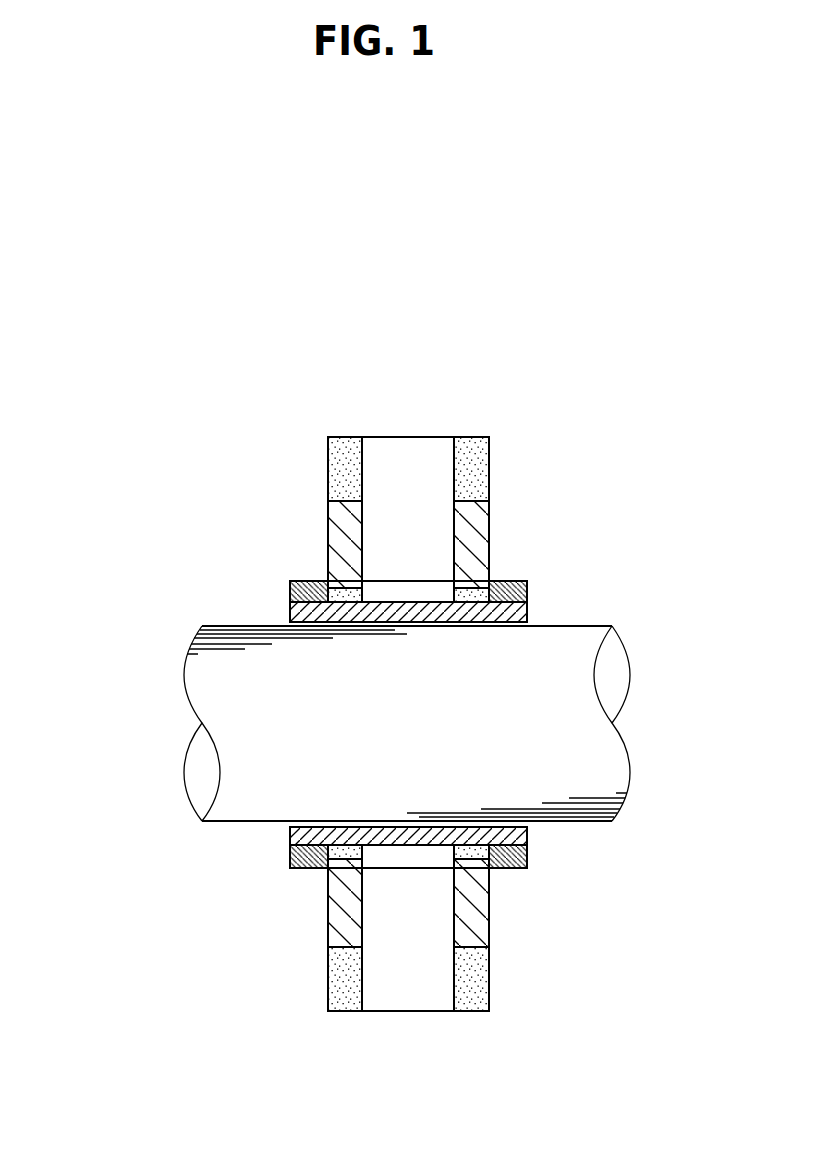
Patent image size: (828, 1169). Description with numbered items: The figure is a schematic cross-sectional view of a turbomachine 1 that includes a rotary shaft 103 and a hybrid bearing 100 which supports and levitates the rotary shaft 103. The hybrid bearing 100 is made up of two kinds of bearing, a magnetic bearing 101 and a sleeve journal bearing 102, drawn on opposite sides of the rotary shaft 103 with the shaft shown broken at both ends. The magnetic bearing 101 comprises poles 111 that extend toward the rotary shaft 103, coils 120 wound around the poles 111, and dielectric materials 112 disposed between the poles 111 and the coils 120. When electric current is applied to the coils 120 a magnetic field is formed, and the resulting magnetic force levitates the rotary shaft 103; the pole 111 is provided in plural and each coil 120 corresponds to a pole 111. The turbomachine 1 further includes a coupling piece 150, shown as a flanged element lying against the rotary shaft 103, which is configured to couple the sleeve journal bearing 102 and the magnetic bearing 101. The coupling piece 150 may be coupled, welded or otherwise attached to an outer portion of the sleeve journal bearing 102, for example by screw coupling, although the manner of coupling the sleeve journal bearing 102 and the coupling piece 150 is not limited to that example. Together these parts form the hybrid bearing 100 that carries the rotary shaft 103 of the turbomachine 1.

The turbomachine 1 is at (58, 354).
The hybrid bearing 100 is at (565, 571).
The magnetic bearing 101 is at (638, 380).
The poles 111 is at (403, 448).
The dielectric materials 112 is at (477, 462).
The coils 120 is at (480, 538).
The coupling piece 150 is at (303, 582).
The rotary shaft 103 is at (237, 642).
The sleeve journal bearing 102 is at (300, 836).